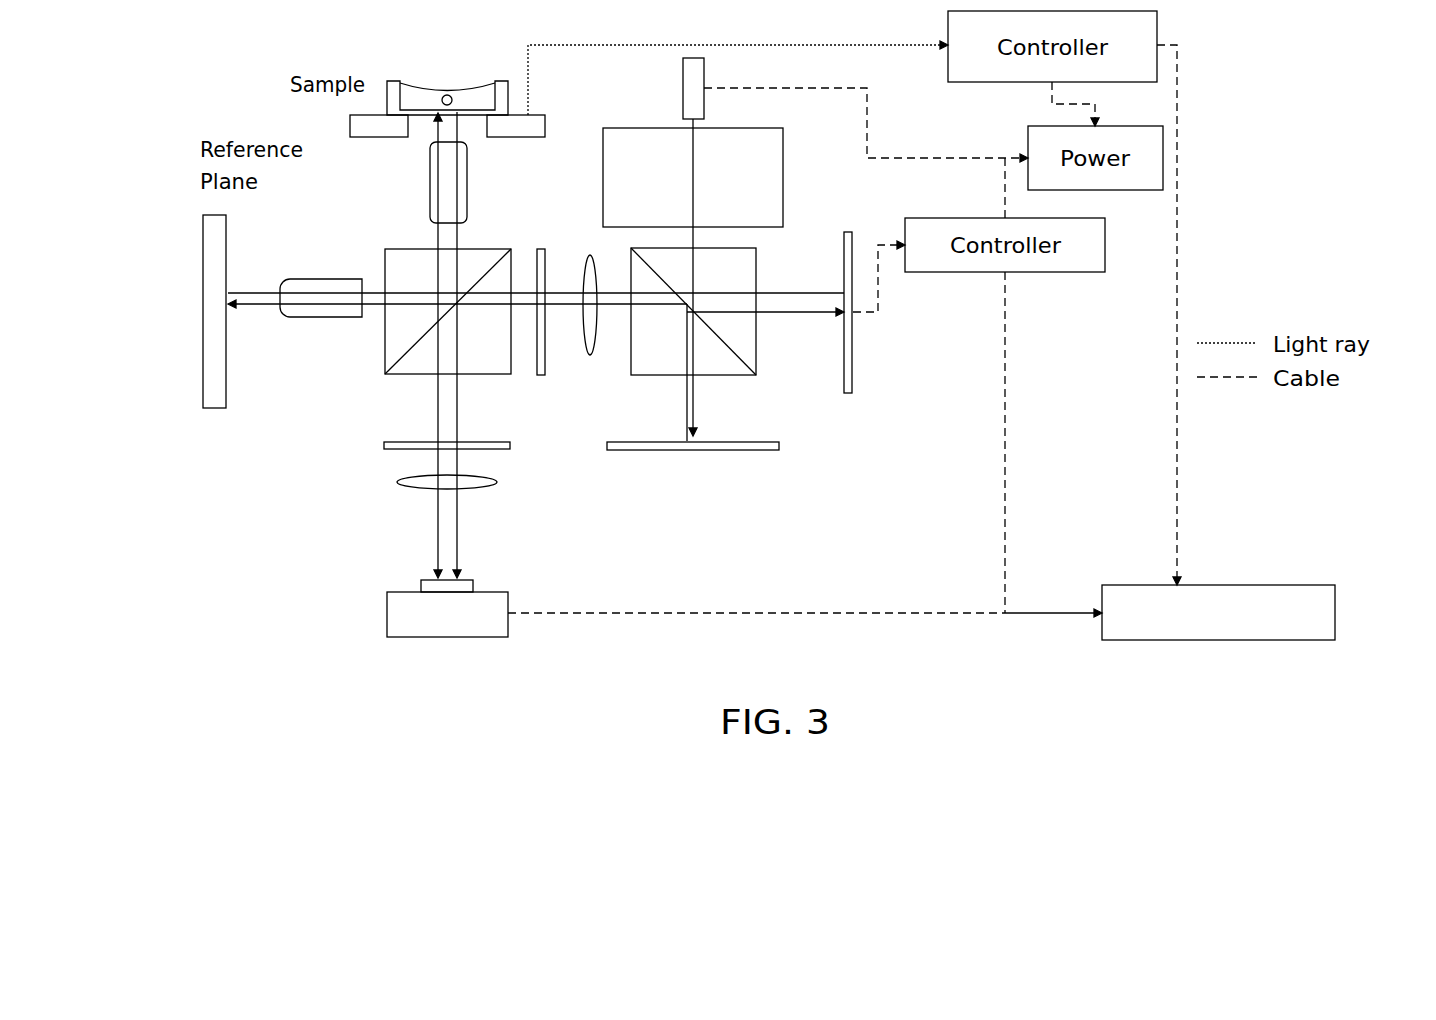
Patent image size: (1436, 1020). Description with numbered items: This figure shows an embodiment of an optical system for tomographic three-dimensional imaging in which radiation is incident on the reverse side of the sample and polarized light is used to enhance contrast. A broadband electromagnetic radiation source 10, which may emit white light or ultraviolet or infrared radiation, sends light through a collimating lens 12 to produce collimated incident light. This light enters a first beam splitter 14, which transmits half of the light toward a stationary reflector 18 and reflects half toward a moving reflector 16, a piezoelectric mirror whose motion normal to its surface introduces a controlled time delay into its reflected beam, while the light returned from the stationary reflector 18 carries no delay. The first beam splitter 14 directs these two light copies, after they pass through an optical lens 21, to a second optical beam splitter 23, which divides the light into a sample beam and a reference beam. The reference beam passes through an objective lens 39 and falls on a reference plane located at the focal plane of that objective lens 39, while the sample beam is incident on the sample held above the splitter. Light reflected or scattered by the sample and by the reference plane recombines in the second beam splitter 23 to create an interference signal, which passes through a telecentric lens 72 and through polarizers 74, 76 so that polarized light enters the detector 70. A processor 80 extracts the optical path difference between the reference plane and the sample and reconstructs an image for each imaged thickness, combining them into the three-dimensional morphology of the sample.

The broadband electromagnetic radiation source 10 is at (684, 87).
The lens 12 is at (693, 177).
The first beam splitter 14 is at (735, 273).
The moving reflector 16 is at (922, 315).
The stationary reflector 18 is at (705, 449).
The optical lens 21 is at (426, 482).
The second optical beam splitter 23 is at (483, 362).
The objective lens 39 is at (317, 279).
The detector 70 is at (397, 615).
The telecentric lens 72 is at (428, 185).
The polarizer 74 is at (540, 248).
The polarizer 76 is at (383, 442).
The processor 80 is at (1218, 612).